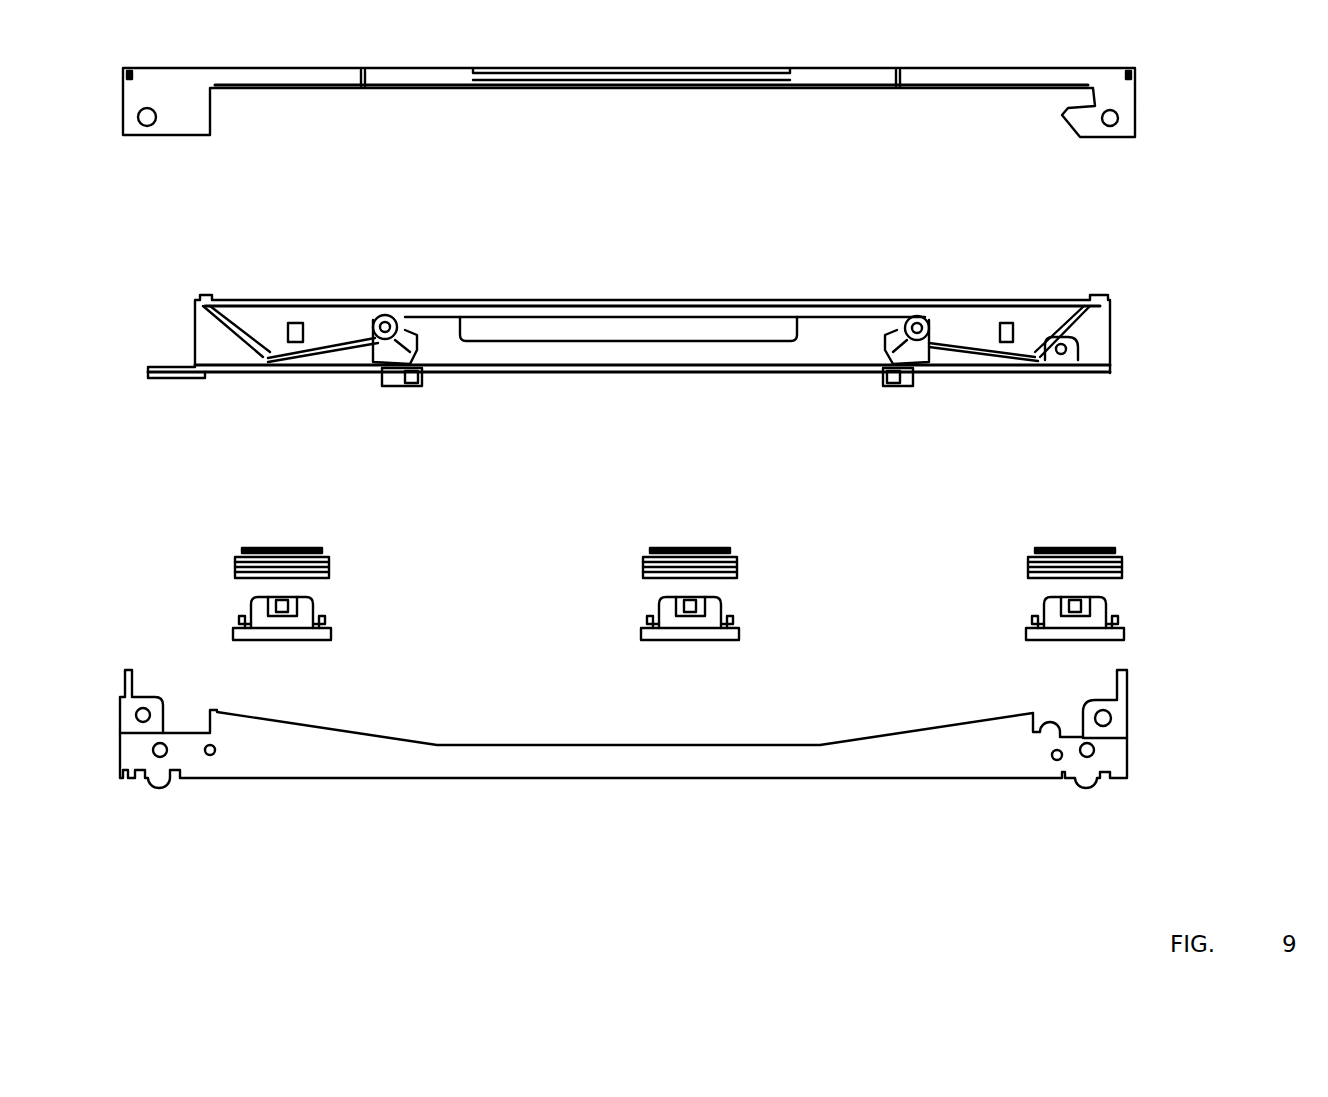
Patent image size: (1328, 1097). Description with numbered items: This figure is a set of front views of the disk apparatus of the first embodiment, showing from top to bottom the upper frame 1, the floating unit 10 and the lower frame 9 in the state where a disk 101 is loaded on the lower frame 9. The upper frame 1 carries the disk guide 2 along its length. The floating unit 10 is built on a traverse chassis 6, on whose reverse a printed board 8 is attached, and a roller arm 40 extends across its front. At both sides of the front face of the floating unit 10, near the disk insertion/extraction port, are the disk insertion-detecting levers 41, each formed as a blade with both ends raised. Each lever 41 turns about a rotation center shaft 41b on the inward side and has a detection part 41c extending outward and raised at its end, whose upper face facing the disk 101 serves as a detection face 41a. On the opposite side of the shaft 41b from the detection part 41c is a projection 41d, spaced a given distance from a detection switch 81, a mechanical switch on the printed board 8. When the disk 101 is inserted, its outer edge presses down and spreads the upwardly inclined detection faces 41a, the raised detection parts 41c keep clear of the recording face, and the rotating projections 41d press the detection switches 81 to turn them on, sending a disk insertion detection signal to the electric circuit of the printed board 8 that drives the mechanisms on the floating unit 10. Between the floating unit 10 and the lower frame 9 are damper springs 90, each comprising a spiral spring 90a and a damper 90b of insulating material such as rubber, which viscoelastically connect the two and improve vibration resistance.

The upper frame 1 is at (667, 115).
The disk guide 2 is at (600, 86).
The traverse chassis 6 is at (1098, 353).
The printed board 8 is at (458, 372).
The lower frame 9 is at (1120, 724).
The floating unit 10 is at (682, 351).
The roller arm 40 is at (560, 310).
The disk insertion-detecting lever 41 is at (639, 354).
The detection face 41a is at (297, 312).
The rotation center shaft 41b is at (392, 314).
The detection part 41c is at (232, 313).
The projection 41d is at (383, 373).
The detection switch 81 is at (405, 377).
The damper spring 90 is at (686, 598).
The spiral spring 90a is at (330, 567).
The damper 90b is at (330, 635).
The disk 101 is at (700, 305).